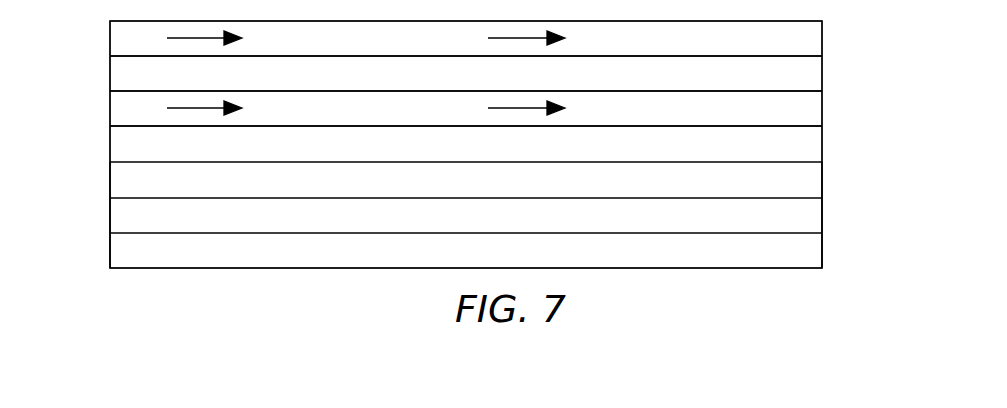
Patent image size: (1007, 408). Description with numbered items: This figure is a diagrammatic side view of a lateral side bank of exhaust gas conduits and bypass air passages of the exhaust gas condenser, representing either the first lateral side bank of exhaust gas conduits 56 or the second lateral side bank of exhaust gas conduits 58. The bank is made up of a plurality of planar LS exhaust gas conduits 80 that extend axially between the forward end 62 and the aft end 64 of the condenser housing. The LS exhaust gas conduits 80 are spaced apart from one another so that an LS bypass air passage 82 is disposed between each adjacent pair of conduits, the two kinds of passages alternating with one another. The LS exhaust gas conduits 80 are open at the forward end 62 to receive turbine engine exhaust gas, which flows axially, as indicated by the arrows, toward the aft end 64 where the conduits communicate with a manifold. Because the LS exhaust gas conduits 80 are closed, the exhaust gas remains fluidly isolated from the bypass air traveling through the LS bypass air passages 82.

The first lateral side bank of exhaust gas conduits 56 is at (842, 125).
The second lateral side bank of exhaust gas conduits 58 is at (466, 144).
The LS exhaust gas conduit 80 is at (110, 33).
The LS bypass air passage 82 is at (110, 72).
The forward end 62 is at (110, 268).
The aft end 64 is at (822, 268).